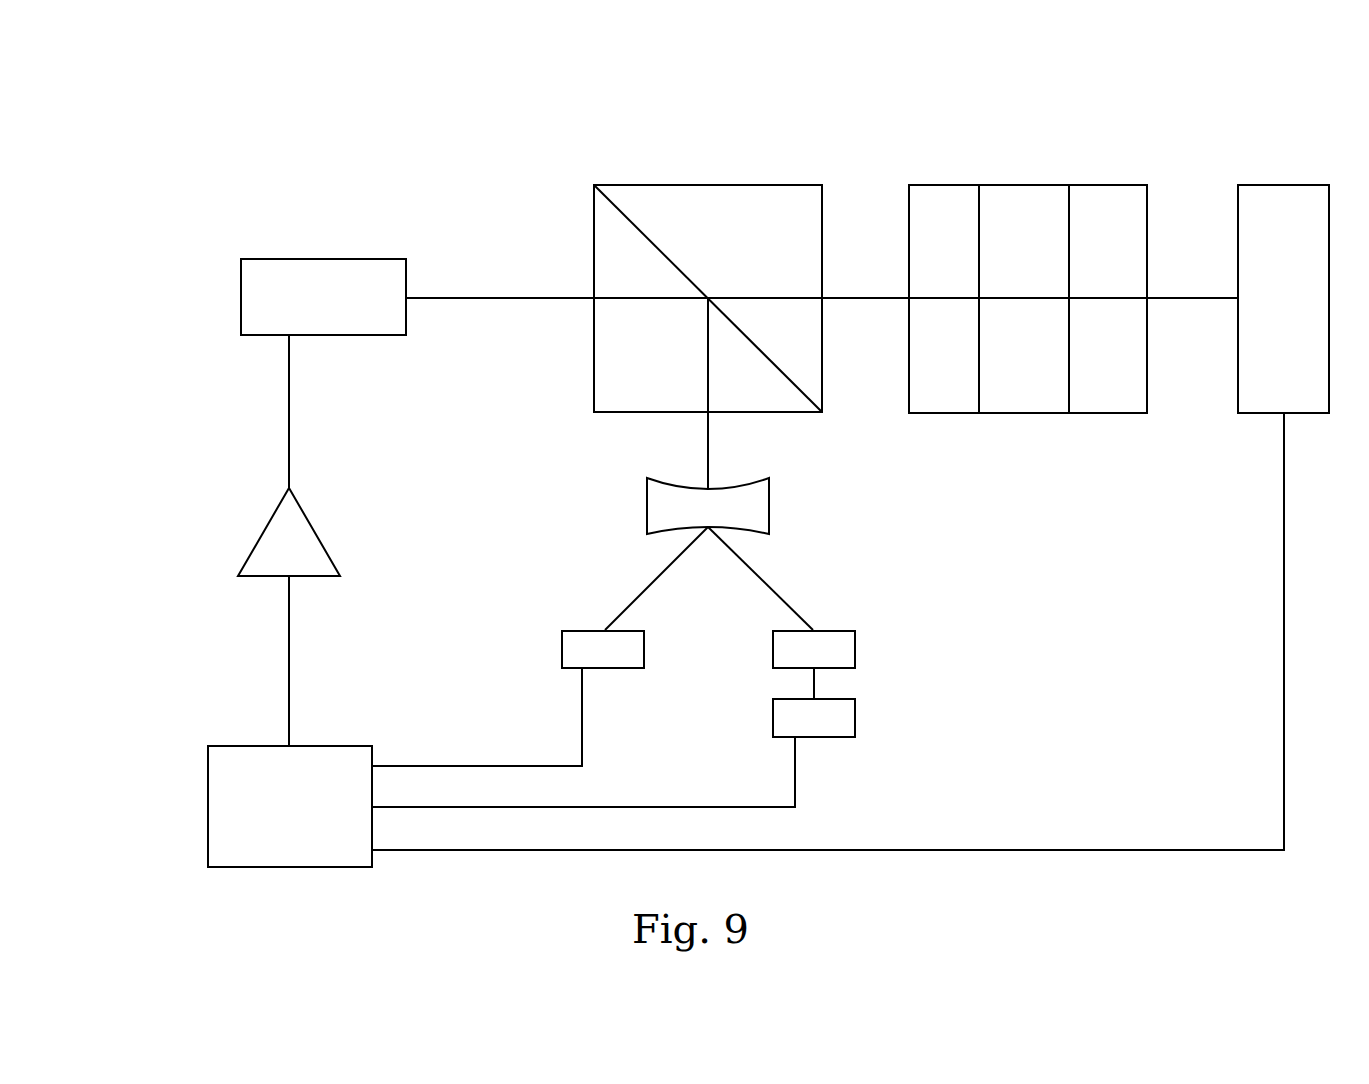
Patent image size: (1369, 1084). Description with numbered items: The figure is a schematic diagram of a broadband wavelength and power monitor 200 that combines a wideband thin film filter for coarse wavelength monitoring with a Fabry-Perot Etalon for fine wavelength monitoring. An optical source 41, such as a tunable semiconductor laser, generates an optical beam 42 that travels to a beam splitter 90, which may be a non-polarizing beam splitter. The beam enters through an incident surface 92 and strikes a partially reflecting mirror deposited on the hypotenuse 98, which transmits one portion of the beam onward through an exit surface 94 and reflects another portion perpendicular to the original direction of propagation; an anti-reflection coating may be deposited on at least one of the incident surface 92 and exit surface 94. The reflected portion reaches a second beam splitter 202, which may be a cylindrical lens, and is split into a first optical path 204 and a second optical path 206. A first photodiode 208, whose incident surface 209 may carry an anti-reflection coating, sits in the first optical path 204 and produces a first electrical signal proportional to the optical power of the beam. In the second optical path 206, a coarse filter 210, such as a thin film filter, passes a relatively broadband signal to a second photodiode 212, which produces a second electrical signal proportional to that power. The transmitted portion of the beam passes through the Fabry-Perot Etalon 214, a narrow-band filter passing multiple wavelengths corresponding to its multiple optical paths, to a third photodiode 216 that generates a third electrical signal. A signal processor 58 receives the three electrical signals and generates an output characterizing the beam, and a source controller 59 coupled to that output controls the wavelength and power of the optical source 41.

The optical source 41 is at (323, 271).
The optical beam 42 is at (500, 272).
The beam splitter 90 is at (708, 322).
The incident surface 92 is at (567, 298).
The exit surface 94 is at (795, 298).
The hypotenuse 98 is at (708, 298).
The broadband wavelength and power monitor 200 is at (1030, 189).
The Fabry-Perot Etalon 214 is at (1028, 273).
The third photodiode 216 is at (850, 492).
The second beam splitter 202 is at (674, 510).
The first optical path 204 is at (669, 580).
The second optical path 206 is at (783, 578).
The incident surface 209 is at (598, 624).
The first photodiode 208 is at (534, 698).
The coarse filter 210 is at (852, 676).
The second photodiode 212 is at (651, 753).
The source controller 59 is at (296, 540).
The signal processor 58 is at (290, 781).